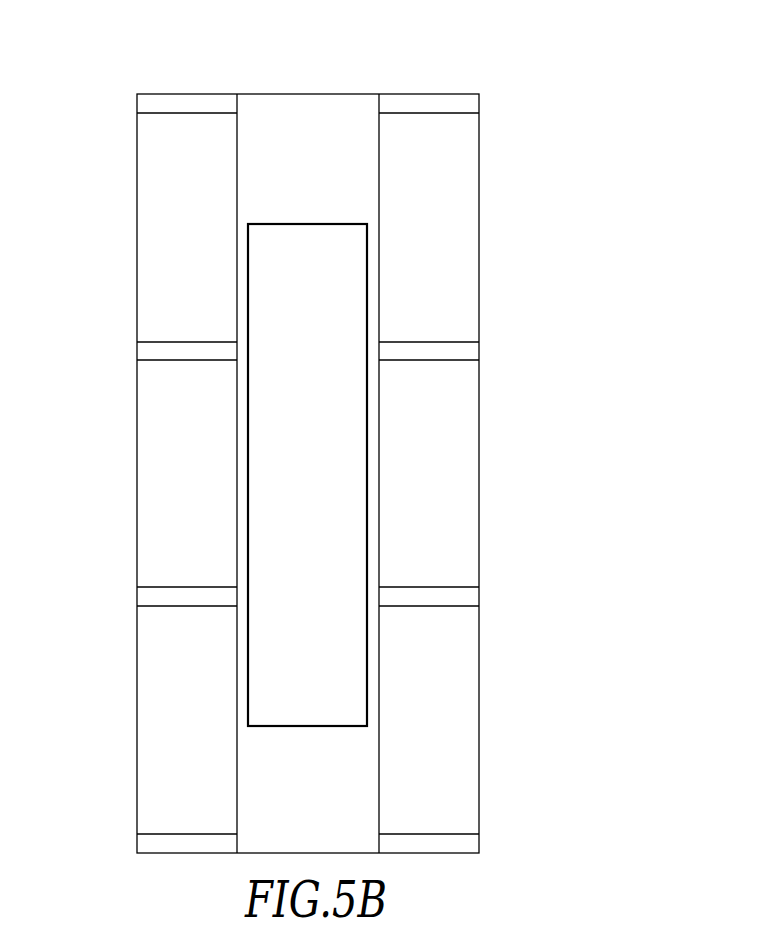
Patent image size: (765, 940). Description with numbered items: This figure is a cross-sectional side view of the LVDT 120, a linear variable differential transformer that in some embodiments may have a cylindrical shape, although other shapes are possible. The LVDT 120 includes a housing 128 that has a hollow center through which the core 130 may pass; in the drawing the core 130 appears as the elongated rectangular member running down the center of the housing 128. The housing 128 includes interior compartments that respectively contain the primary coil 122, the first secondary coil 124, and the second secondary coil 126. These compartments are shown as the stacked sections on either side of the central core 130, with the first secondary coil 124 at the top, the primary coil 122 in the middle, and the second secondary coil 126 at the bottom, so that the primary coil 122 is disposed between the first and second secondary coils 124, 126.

The LVDT 120 is at (431, 86).
The primary coil 122 is at (156, 442).
The first secondary coil 124 is at (150, 202).
The second secondary coil 126 is at (160, 730).
The housing 128 is at (480, 291).
The core 130 is at (338, 715).